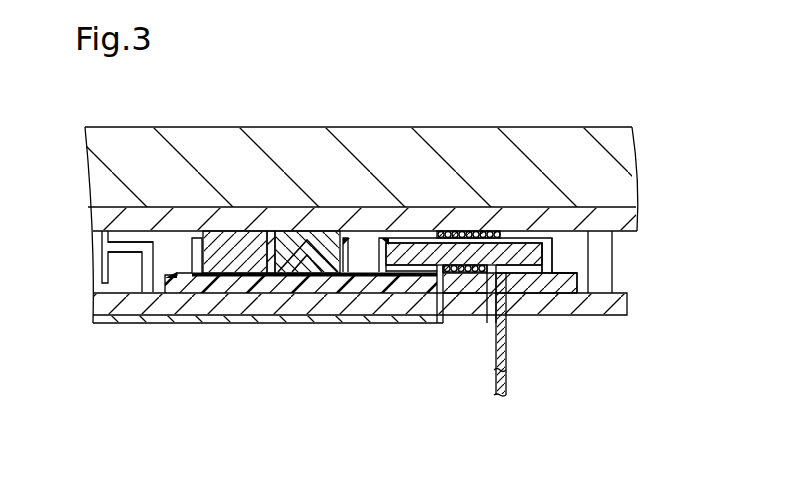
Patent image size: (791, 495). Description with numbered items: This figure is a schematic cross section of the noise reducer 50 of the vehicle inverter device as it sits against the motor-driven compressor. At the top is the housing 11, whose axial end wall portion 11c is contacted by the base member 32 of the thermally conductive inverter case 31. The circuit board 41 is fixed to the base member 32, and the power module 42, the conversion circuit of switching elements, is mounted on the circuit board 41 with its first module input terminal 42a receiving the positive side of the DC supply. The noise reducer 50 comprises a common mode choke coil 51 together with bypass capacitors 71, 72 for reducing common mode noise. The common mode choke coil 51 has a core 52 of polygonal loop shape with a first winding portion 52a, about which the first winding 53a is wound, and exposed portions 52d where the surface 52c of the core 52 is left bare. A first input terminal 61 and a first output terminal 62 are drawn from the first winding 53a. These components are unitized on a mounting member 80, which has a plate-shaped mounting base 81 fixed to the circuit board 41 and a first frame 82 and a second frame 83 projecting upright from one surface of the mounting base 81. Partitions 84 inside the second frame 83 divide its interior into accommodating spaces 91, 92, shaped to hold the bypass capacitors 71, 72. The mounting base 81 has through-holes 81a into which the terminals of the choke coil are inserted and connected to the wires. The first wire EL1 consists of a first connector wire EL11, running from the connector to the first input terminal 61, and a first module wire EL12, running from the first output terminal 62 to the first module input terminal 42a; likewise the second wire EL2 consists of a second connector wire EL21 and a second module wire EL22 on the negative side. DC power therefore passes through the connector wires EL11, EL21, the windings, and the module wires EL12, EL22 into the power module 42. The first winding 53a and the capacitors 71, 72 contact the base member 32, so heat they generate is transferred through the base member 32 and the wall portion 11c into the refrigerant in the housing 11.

The housing 11 is at (372, 152).
The wall portion 11c is at (607, 135).
The inverter case 31 is at (405, 216).
The base member 32 is at (634, 213).
The circuit board 41 is at (627, 305).
The power module 42 is at (103, 194).
The first module input terminal 42a is at (131, 243).
The noise reducer 50 is at (568, 261).
The common mode choke coil 51 is at (518, 292).
The core 52 is at (398, 255).
The first winding portion 52a is at (462, 296).
The surface 52c is at (430, 242).
The exposed portions 52d is at (527, 250).
The first winding 53a is at (469, 236).
The first input terminal 61 is at (491, 323).
The first output terminal 62 is at (435, 323).
The bypass capacitor 71 is at (315, 262).
The bypass capacitor 72 is at (231, 270).
The mounting member 80 is at (560, 288).
The mounting base 81 is at (577, 274).
The through-holes 81a is at (490, 262).
The first frame 82 is at (557, 243).
The second frame 83 is at (346, 240).
The partitions 84 is at (270, 262).
The accommodating space 91 is at (307, 225).
The accommodating space 92 is at (235, 251).
The first wire EL1 is at (380, 326).
The first connector wire EL11 is at (507, 357).
The first module wire EL12 is at (153, 318).
The second wire EL2 is at (357, 361).
The second connector wire EL21 is at (507, 382).
The second module wire EL22 is at (110, 325).